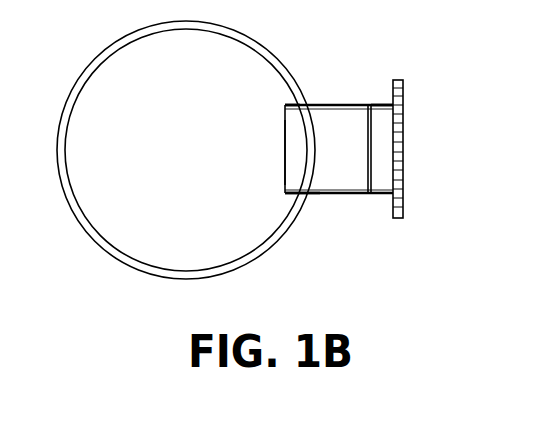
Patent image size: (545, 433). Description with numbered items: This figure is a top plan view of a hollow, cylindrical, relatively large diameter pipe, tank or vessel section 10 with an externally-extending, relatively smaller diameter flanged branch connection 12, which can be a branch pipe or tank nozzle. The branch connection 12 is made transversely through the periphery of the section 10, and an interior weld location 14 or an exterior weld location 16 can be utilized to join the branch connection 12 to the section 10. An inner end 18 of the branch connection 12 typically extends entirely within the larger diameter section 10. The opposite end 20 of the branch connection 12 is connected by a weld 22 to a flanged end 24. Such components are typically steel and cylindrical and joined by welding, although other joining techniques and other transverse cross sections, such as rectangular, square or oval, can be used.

The section of pipe, tank or vessel 10 is at (141, 274).
The flanged branch connection 12 is at (332, 104).
The interior weld location 14 is at (300, 106).
The exterior weld location 16 is at (313, 195).
The inner end 18 is at (286, 160).
The opposite end 20 is at (367, 103).
The weld 22 is at (372, 103).
The flanged end 24 is at (403, 100).